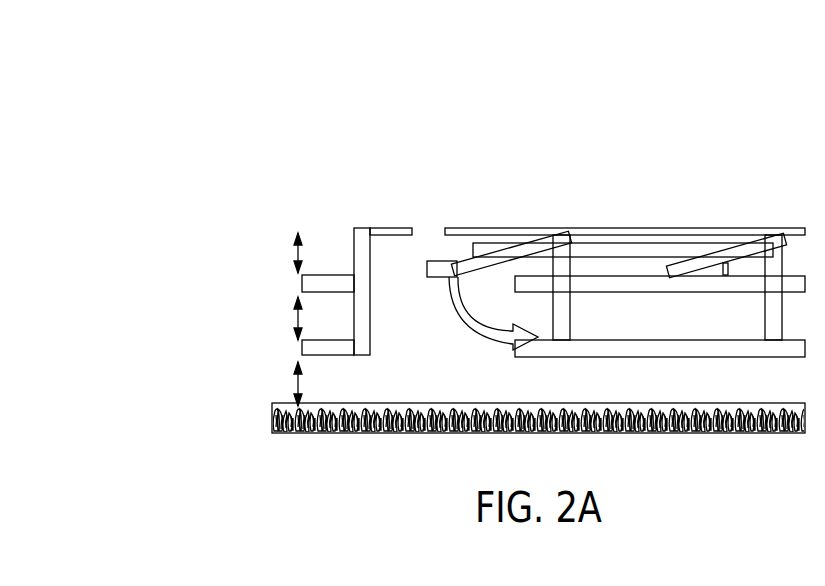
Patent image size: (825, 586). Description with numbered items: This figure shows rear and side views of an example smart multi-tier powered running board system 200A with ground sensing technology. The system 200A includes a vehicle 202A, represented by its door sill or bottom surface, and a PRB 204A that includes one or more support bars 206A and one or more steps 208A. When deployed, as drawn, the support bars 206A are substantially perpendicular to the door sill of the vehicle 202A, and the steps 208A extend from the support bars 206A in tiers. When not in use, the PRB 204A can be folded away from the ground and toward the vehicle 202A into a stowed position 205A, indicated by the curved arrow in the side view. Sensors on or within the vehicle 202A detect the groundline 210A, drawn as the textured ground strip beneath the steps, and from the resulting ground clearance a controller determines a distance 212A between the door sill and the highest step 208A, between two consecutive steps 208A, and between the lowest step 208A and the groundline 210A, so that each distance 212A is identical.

The system 200A is at (678, 88).
The vehicle 202A is at (355, 218).
The PRB 204A is at (338, 372).
The stowed position 205A is at (430, 292).
The support bars 206A is at (372, 255).
The steps 208A is at (302, 285).
The groundline 210A is at (258, 405).
The distance 212A is at (292, 252).